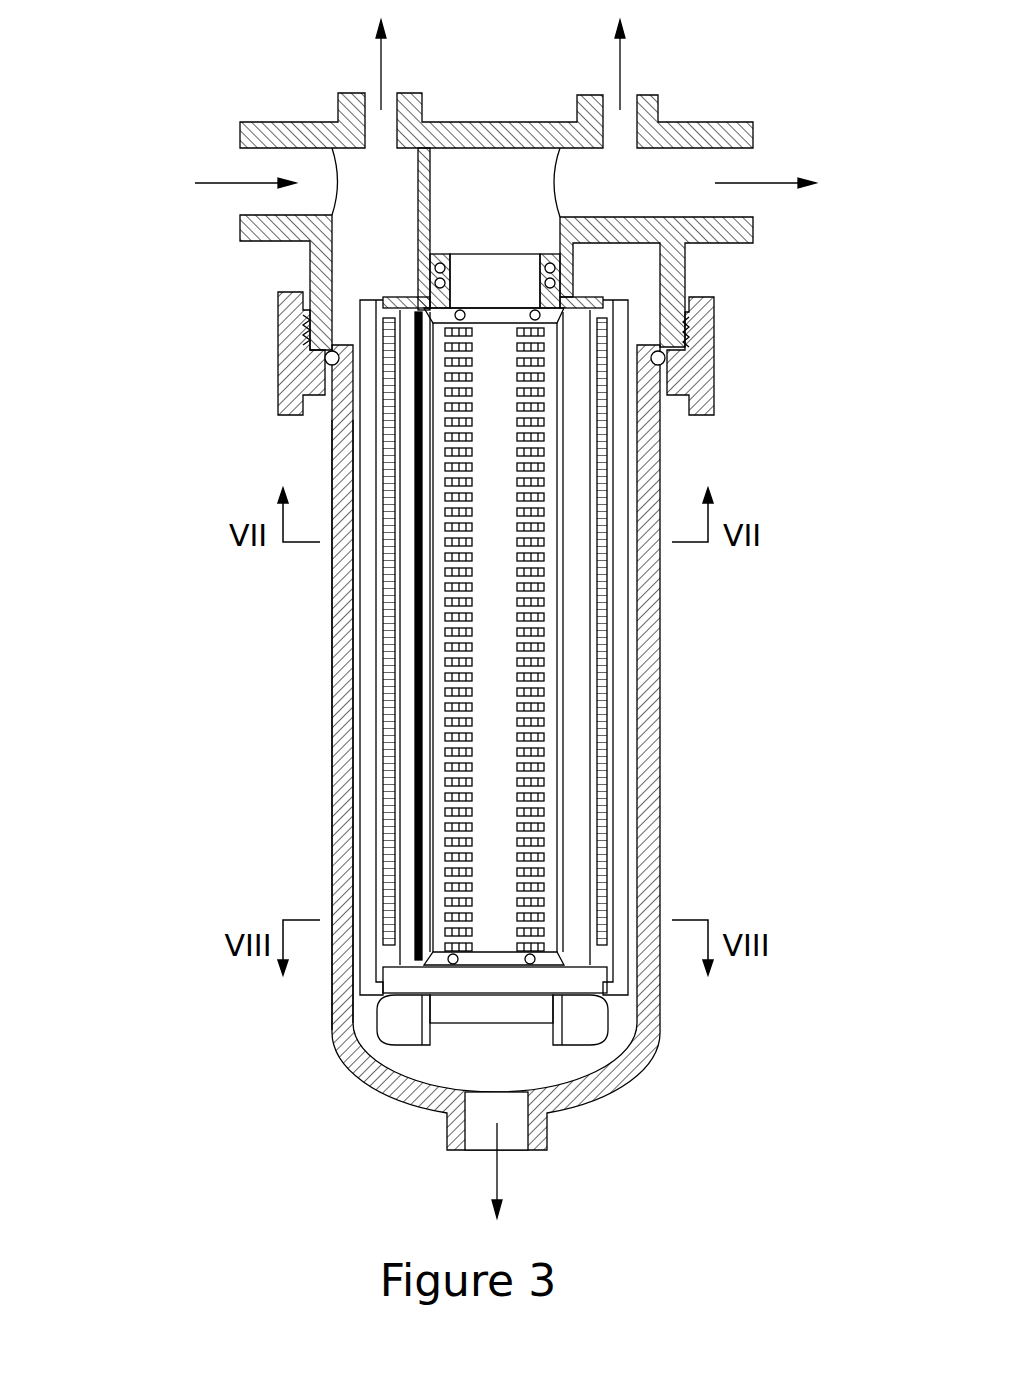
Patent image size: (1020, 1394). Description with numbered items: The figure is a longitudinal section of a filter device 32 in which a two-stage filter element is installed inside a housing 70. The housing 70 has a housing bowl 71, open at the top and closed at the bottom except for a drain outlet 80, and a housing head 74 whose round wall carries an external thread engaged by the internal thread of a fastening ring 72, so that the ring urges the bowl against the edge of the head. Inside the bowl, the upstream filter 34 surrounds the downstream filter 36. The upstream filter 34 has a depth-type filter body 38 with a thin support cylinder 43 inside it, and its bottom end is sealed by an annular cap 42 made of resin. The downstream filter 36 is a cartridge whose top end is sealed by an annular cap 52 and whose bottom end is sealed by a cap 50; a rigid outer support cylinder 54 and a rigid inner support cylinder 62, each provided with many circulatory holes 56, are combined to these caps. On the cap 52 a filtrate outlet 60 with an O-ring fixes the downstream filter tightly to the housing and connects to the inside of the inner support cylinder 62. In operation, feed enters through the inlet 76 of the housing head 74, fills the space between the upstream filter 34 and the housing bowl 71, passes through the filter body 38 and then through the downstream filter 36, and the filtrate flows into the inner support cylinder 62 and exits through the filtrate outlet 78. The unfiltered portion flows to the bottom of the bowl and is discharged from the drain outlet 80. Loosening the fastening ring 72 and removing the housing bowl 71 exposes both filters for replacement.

The filter device 32 is at (692, 695).
The upstream filter 34 is at (357, 700).
The downstream filter 36 is at (385, 568).
The filter body 38 is at (372, 810).
The annular cap 42 is at (372, 985).
The support cylinder 43 is at (382, 315).
The cap 50 is at (466, 979).
The annular cap 52 is at (590, 290).
The outer support cylinder 54 is at (603, 952).
The circulatory holes 56 is at (518, 900).
The filtrate outlet 60 is at (542, 253).
The inner support cylinder 62 is at (494, 630).
The housing 70 is at (332, 793).
The housing bowl 71 is at (333, 625).
The fastening ring 72 is at (300, 420).
The housing head 74 is at (310, 268).
The inlet 76 is at (300, 120).
The filtrate outlet 78 is at (690, 120).
The drain outlet 80 is at (531, 1150).